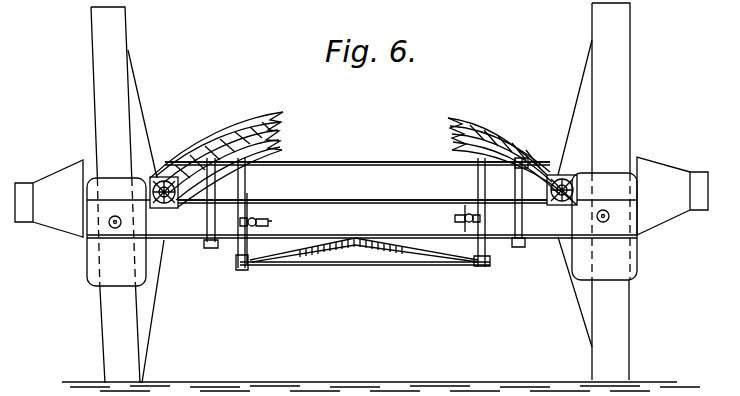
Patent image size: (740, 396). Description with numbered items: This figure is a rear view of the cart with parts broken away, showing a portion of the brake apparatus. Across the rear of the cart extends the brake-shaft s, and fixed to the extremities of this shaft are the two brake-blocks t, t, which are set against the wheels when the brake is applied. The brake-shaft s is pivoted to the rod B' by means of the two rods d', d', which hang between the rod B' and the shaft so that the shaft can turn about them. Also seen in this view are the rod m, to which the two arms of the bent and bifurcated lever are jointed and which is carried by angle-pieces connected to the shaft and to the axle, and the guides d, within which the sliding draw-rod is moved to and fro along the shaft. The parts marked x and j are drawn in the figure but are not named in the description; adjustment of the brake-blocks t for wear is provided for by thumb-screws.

The bundle of stalks x is at (267, 115).
The rod B' is at (357, 144).
The brake-shaft s is at (362, 212).
The rod d' is at (374, 215).
The guide d is at (496, 216).
The rod m is at (370, 262).
The pivot bolt j is at (129, 216).
The brake-block t is at (362, 229).